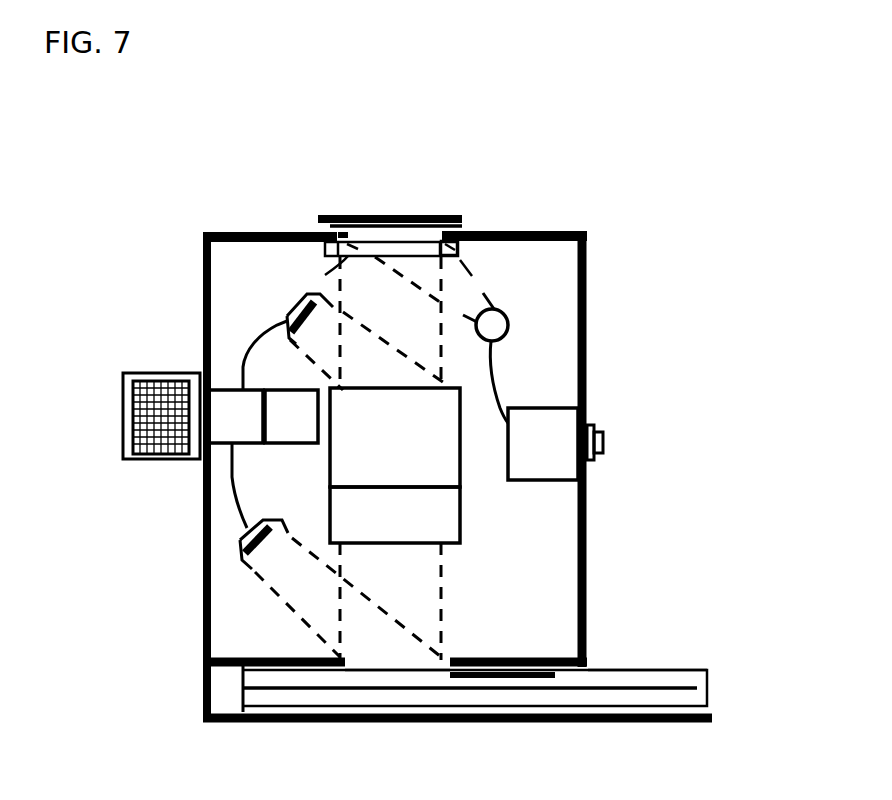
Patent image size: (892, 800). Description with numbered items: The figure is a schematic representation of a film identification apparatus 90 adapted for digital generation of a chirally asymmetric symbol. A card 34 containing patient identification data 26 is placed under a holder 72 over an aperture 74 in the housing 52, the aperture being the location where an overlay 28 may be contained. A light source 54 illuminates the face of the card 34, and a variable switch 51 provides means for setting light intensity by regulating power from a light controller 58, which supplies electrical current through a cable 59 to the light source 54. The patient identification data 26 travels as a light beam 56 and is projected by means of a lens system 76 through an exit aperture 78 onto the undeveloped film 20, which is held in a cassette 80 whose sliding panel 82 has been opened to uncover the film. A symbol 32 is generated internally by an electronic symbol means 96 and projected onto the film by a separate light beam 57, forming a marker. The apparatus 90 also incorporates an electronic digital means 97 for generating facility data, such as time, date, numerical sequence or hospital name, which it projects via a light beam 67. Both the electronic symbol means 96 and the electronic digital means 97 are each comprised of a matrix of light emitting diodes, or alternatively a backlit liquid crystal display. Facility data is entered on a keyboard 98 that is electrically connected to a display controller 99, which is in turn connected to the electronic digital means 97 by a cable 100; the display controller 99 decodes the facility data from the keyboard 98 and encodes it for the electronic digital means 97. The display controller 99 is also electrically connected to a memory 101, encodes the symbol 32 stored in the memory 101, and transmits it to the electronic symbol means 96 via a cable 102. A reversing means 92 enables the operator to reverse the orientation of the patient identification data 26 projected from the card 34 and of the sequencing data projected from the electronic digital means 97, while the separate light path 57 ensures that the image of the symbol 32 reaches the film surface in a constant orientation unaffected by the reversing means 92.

The undeveloped film 20 is at (680, 683).
The patient identification data 26 is at (405, 224).
The overlay 28 is at (343, 245).
The symbol 32 is at (348, 256).
The card 34 is at (488, 230).
The variable switch 51 is at (603, 446).
The housing 52 is at (203, 623).
The light source 54 is at (510, 327).
The light beam 56 is at (410, 322).
The light beam 57 is at (314, 587).
The light controller 58 is at (556, 457).
The cable 59 is at (494, 385).
The light beam 67 is at (331, 342).
The holder 72 is at (350, 215).
The aperture 74 is at (422, 240).
The lens system 76 is at (406, 451).
The exit aperture 78 is at (394, 662).
The cassette 80 is at (603, 672).
The sliding panel 82 is at (528, 676).
The film identification apparatus 90 is at (394, 91).
The reversing means 92 is at (406, 531).
The electronic symbol means 96 is at (240, 535).
The electronic digital means 97 is at (362, 262).
The keyboard 98 is at (123, 392).
The display controller 99 is at (248, 431).
The cable 100 is at (243, 362).
The memory 101 is at (312, 431).
The cable 102 is at (229, 481).